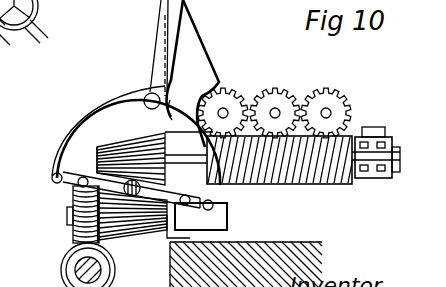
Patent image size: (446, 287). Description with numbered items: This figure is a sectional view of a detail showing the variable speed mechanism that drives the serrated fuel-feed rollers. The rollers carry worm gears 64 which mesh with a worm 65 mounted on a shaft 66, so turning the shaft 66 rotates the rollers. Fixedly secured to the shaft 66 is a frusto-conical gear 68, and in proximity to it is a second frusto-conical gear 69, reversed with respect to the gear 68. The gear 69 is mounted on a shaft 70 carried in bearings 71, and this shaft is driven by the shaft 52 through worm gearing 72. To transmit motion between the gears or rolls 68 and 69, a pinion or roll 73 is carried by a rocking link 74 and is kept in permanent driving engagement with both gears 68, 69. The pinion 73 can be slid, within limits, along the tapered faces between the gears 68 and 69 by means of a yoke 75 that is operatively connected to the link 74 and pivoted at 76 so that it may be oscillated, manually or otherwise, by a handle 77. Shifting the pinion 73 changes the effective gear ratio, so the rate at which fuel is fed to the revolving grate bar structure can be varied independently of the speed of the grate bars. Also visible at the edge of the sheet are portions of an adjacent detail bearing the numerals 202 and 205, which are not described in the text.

The shaft 52 is at (80, 268).
The worm gears 64 is at (232, 101).
The worm 65 is at (310, 180).
The shaft 66 is at (396, 180).
The frusto-conical gear 68 is at (97, 153).
The second frusto-conical gear 69 is at (147, 214).
The shaft 70 is at (190, 238).
The bearings 71 is at (228, 222).
The worm gearing 72 is at (72, 226).
The pinion 73 is at (128, 166).
The rocking link 74 is at (72, 190).
The yoke 75 is at (119, 112).
The pivot 76 is at (152, 93).
The handle 77 is at (188, 6).
The wheel (adjacent figure) 202 is at (50, 10).
The wheel rim (adjacent figure) 205 is at (44, 18).